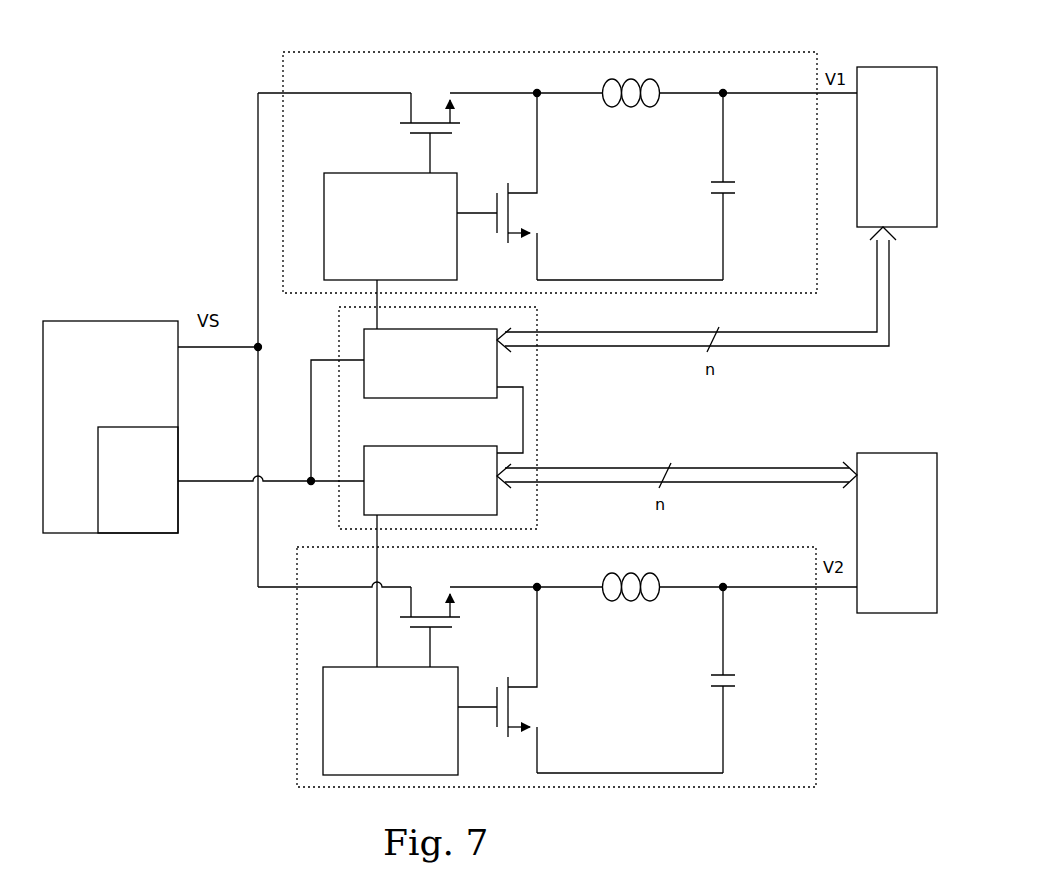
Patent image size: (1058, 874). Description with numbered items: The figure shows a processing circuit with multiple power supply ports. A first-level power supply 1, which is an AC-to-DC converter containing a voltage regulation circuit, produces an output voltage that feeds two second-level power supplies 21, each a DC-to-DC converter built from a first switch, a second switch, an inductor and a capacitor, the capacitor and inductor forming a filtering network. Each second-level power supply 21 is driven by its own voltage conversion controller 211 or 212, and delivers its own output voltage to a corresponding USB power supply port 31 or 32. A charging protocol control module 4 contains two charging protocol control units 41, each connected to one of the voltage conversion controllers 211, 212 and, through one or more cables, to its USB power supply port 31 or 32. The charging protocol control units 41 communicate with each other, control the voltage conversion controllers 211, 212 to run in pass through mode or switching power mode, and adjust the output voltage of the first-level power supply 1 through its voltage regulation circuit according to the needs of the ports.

The first-level power supply 1 is at (130, 320).
The second-level power supply 21 is at (563, 400).
The voltage conversion controller 211 is at (389, 172).
The voltage conversion controller 212 is at (323, 737).
The USB power supply port 31 is at (893, 67).
The USB power supply port 32 is at (880, 453).
The charging protocol control module 4 is at (479, 422).
The charging protocol control unit 41 is at (500, 362).